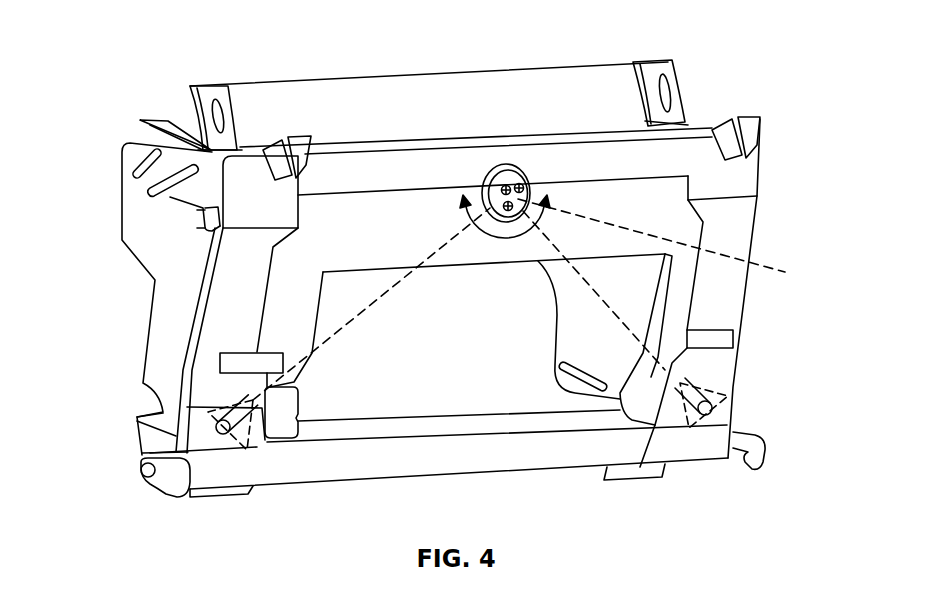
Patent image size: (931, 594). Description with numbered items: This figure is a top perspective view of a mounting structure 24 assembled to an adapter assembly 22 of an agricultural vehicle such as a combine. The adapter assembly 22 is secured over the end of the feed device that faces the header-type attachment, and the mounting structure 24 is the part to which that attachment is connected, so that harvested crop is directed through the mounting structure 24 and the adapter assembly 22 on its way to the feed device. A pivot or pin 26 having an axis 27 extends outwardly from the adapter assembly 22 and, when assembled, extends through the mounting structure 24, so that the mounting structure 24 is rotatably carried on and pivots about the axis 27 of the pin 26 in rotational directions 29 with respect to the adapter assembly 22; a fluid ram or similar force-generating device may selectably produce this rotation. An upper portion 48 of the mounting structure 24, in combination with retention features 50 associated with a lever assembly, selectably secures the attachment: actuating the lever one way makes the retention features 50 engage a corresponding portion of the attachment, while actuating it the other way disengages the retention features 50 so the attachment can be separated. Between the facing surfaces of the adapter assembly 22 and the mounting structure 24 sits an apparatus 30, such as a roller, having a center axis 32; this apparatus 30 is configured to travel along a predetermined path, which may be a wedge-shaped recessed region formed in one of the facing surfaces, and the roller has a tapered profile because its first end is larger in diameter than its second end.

The adapter assembly 22 is at (122, 252).
The mounting structure 24 is at (763, 177).
The pivot or pin 26 is at (507, 165).
The axis 27 is at (773, 270).
The rotational directions 29 is at (496, 224).
The apparatus 30 is at (253, 401).
The center axis 32 is at (155, 486).
The upper portion 48 is at (680, 78).
The retention features 50 is at (753, 432).